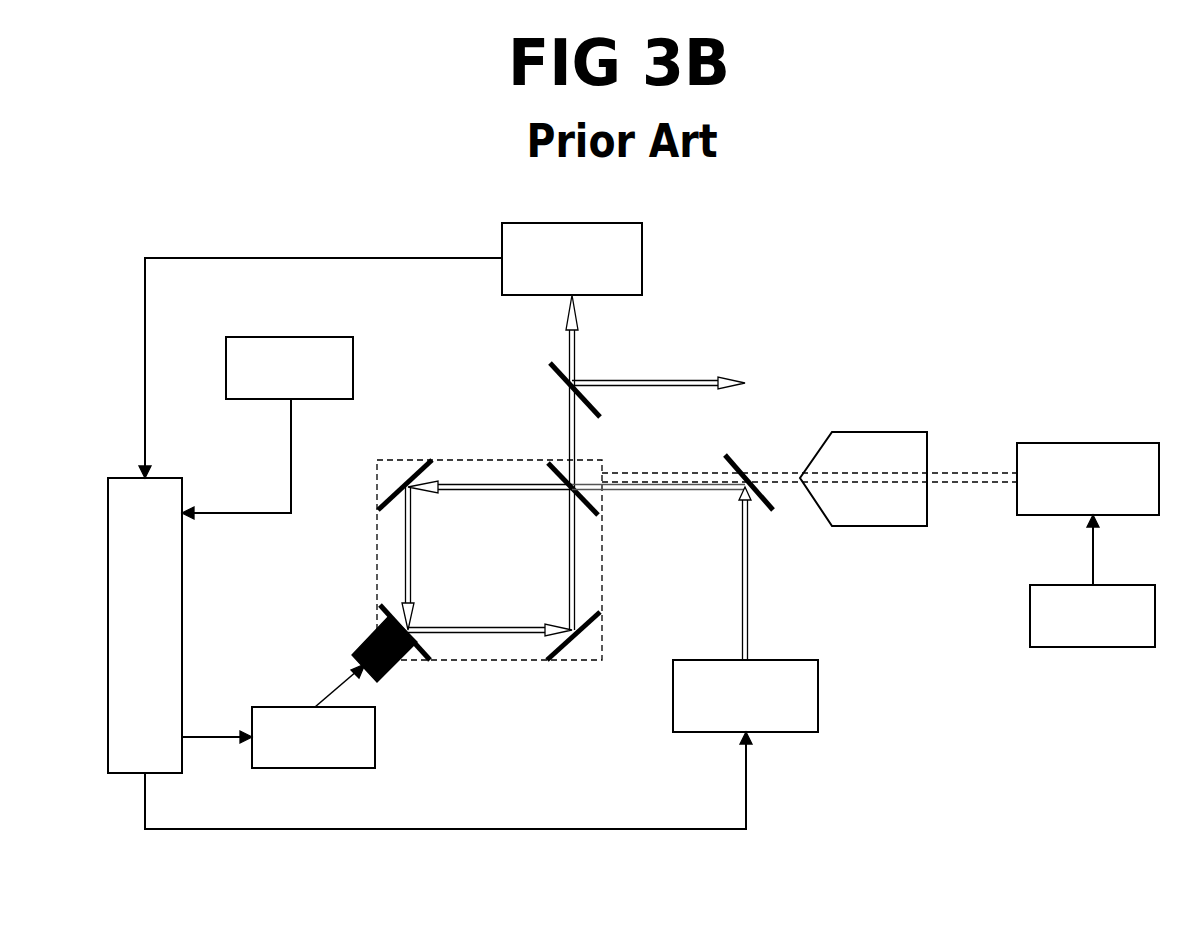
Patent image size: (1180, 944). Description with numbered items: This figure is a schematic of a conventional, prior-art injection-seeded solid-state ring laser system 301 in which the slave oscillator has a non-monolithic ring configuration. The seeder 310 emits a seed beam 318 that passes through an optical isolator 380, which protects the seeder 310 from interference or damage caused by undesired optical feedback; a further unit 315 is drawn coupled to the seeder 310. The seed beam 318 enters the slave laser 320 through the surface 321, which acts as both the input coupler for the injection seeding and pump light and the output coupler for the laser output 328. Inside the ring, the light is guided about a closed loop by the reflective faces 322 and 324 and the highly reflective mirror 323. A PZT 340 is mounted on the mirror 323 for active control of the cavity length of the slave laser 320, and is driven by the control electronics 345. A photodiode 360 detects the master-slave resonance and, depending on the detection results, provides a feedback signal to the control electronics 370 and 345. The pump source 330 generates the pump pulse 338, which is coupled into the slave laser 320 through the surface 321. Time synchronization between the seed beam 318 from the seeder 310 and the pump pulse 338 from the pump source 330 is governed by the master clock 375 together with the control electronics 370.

The prior art optical system 301 is at (633, 526).
The seeder 310 is at (1088, 479).
The laser controller 315 is at (1092, 581).
The seed beam 318 is at (809, 459).
The slave laser 320 is at (489, 477).
The surface 321 is at (611, 499).
The face 322 is at (410, 465).
The highly reflective mirror 323 is at (379, 611).
The face 324 is at (589, 644).
The laser output 328 is at (647, 397).
The pump source 330 is at (745, 696).
The pump pulse 338 is at (696, 557).
The PZT 340 is at (399, 666).
The control electronics 345 is at (313, 716).
The photodiode 360 is at (390, 350).
The control electronics 370 is at (430, 653).
The master clock 375 is at (267, 428).
The optical isolator 380 is at (863, 479).